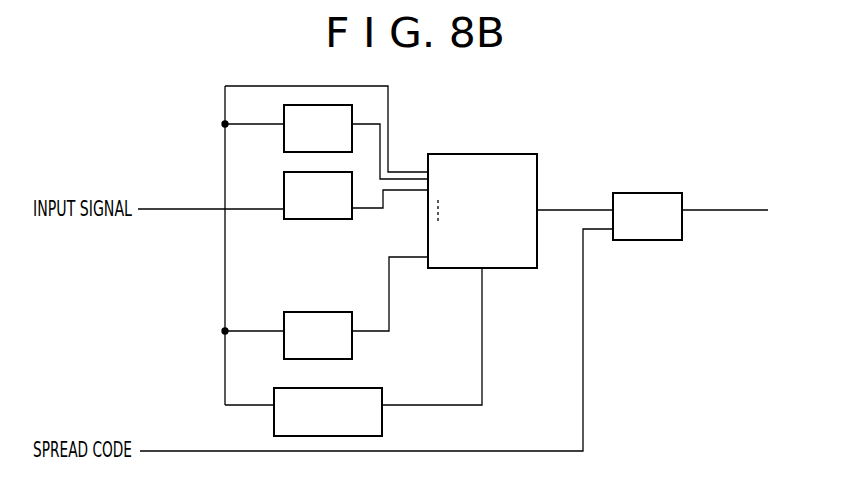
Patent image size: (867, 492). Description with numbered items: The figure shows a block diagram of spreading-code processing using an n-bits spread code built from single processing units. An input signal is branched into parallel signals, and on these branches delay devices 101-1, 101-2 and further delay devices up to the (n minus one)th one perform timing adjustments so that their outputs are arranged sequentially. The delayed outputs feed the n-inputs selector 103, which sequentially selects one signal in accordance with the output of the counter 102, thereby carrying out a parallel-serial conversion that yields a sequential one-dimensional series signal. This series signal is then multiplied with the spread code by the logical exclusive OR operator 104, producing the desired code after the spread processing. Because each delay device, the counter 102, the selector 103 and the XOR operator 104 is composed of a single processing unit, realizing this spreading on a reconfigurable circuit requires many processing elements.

The delay device 101-1 is at (353, 110).
The delay device 101-2 is at (304, 220).
The counter 102 is at (326, 388).
The selector 103 is at (487, 154).
The XOR operator 104 is at (649, 193).